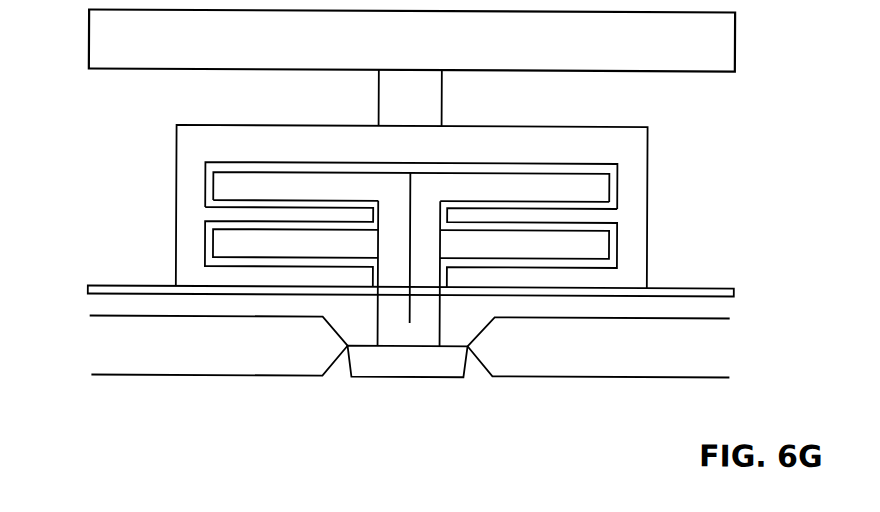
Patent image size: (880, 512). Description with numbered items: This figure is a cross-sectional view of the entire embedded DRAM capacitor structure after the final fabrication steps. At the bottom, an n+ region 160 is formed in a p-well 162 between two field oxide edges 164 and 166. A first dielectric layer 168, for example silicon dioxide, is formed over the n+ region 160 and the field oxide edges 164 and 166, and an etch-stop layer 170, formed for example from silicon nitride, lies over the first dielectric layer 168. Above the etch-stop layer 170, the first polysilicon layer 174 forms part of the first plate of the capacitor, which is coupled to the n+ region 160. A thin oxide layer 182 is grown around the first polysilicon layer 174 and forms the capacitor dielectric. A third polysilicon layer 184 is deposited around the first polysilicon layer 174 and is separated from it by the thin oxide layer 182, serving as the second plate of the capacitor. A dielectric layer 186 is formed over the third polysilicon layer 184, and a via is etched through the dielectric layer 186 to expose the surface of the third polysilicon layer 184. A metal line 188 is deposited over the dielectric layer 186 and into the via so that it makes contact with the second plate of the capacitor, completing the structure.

The n+ region 160 is at (458, 378).
The p-well 162 is at (468, 450).
The field oxide edge 164 is at (297, 376).
The field oxide edge 166 is at (557, 378).
The first dielectric layer 168 is at (85, 305).
The etch-stop layer 170 is at (85, 287).
The first polysilicon layer 174 is at (232, 239).
The thin oxide layer 182 is at (610, 203).
The third polysilicon layer 184 is at (635, 201).
The dielectric layer 186 is at (203, 98).
The metal line 188 is at (98, 49).